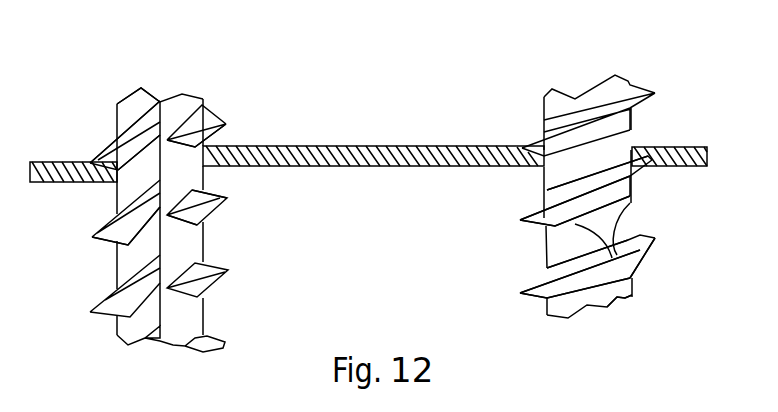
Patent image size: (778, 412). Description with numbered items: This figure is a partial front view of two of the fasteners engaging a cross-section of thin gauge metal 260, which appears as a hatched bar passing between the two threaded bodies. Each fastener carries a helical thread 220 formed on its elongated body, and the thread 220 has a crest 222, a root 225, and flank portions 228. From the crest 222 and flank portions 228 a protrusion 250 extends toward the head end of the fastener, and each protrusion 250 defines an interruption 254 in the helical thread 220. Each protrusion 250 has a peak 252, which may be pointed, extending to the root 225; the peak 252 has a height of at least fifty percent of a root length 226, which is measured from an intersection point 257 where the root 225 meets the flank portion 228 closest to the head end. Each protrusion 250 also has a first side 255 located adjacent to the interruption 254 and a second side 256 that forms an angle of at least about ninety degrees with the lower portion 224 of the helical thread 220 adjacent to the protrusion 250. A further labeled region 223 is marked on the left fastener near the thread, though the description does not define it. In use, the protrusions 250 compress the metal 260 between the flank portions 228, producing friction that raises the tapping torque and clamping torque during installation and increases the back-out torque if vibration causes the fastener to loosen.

The helical thread 220 is at (110, 243).
The crest 222 is at (205, 200).
The winglet 223 is at (207, 200).
The lower portion of the helical thread 224 is at (120, 217).
The root 225 is at (200, 244).
The root length 226 is at (205, 295).
The flank portions 228 is at (213, 133).
The protrusion 250 is at (137, 112).
The peak 252 is at (157, 100).
The interruption 254 is at (198, 100).
The first side 255 is at (215, 180).
The second side 256 is at (137, 205).
The intersection point 257 is at (128, 137).
The metal 260 is at (418, 146).